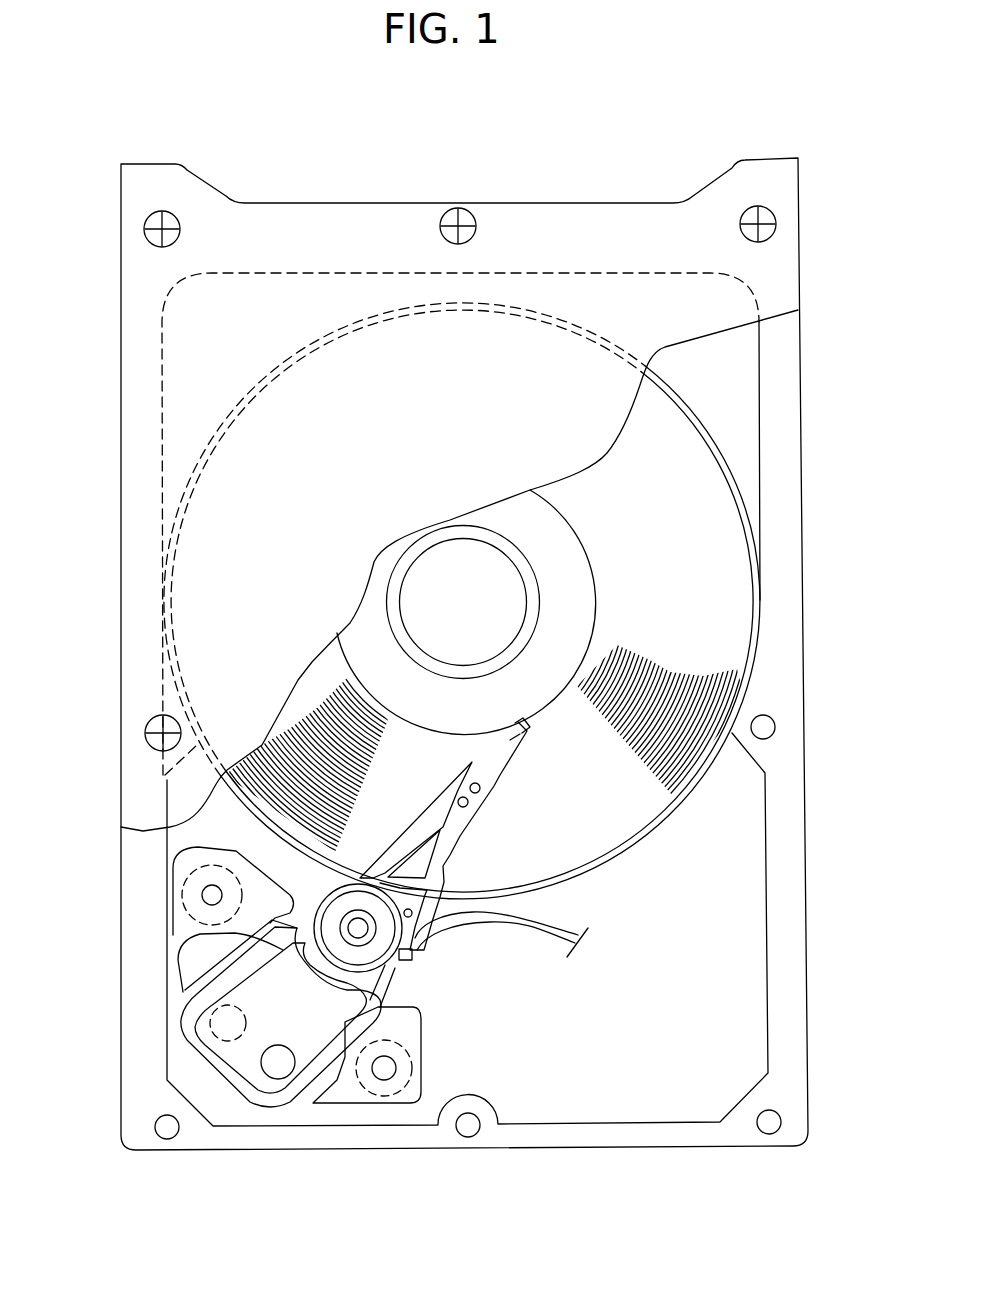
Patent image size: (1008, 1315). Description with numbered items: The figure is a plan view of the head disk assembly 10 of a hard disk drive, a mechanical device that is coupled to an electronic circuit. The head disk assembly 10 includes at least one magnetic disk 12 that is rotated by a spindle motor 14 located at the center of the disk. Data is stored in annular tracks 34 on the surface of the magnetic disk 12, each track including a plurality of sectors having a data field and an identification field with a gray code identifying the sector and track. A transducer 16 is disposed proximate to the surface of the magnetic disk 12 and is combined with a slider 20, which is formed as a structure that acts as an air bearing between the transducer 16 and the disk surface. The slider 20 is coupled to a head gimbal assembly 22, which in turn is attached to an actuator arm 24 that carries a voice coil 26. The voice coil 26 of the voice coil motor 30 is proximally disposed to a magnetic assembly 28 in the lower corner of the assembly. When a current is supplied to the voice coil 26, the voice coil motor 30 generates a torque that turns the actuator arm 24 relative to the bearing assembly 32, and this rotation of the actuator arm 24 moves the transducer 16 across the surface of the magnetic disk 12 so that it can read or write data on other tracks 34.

The head disk assembly 10 is at (600, 115).
The magnetic disk 12 is at (713, 533).
The spindle motor 14 is at (438, 580).
The transducer 16 is at (528, 727).
The slider 20 is at (512, 748).
The head gimbal assembly 22 is at (470, 838).
The actuator arm 24 is at (290, 950).
The voice coil 26 is at (200, 1015).
The magnetic assembly 28 is at (212, 960).
The voice coil motor 30 is at (333, 1082).
The bearing assembly 32 is at (364, 937).
The tracks 34 is at (290, 748).